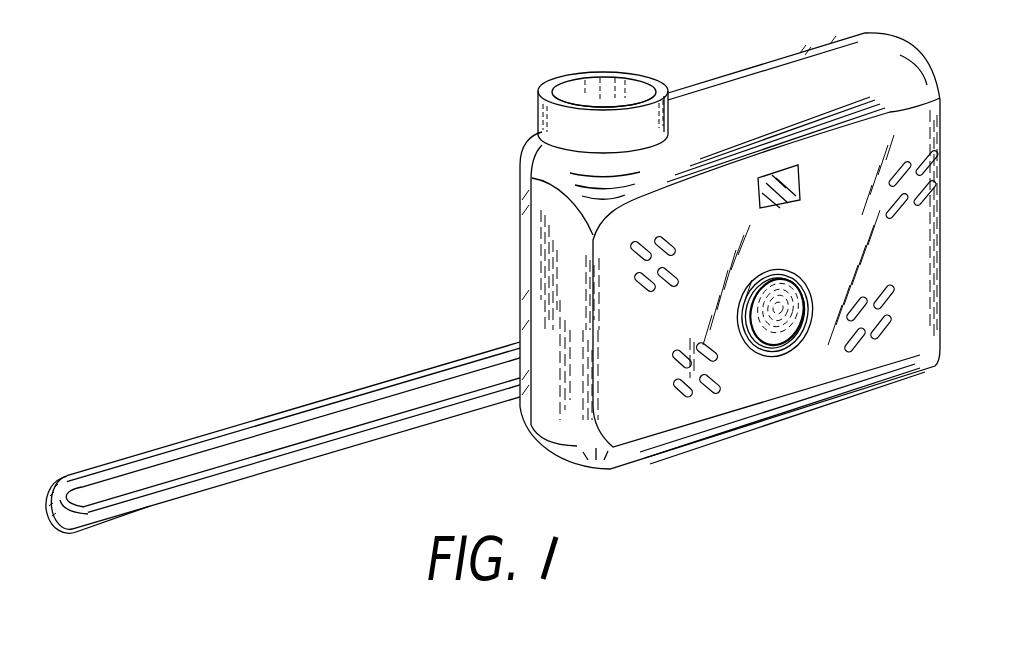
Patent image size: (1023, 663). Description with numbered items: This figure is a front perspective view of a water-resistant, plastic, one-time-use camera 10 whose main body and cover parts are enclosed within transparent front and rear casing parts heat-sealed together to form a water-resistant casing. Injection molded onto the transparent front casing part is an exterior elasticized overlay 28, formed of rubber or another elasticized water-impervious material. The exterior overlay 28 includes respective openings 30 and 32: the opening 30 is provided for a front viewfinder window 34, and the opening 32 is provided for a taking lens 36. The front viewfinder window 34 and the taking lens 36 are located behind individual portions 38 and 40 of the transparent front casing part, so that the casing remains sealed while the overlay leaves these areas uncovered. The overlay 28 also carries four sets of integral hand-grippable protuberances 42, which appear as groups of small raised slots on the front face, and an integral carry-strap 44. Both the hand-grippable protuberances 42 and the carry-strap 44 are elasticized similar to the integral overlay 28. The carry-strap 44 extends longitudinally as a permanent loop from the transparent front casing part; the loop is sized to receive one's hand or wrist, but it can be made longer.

The one-time-use camera 10 is at (494, 76).
The exterior elasticized overlay 28 is at (918, 266).
The opening 30 is at (800, 182).
The opening 32 is at (784, 282).
The front viewfinder window 34 is at (773, 178).
The taking lens 36 is at (796, 325).
The portion of the transparent front casing part 38 is at (778, 185).
The portion of the transparent front casing part 40 is at (774, 340).
The hand-grippable protuberances 42 is at (640, 280).
The carry-strap 44 is at (297, 407).